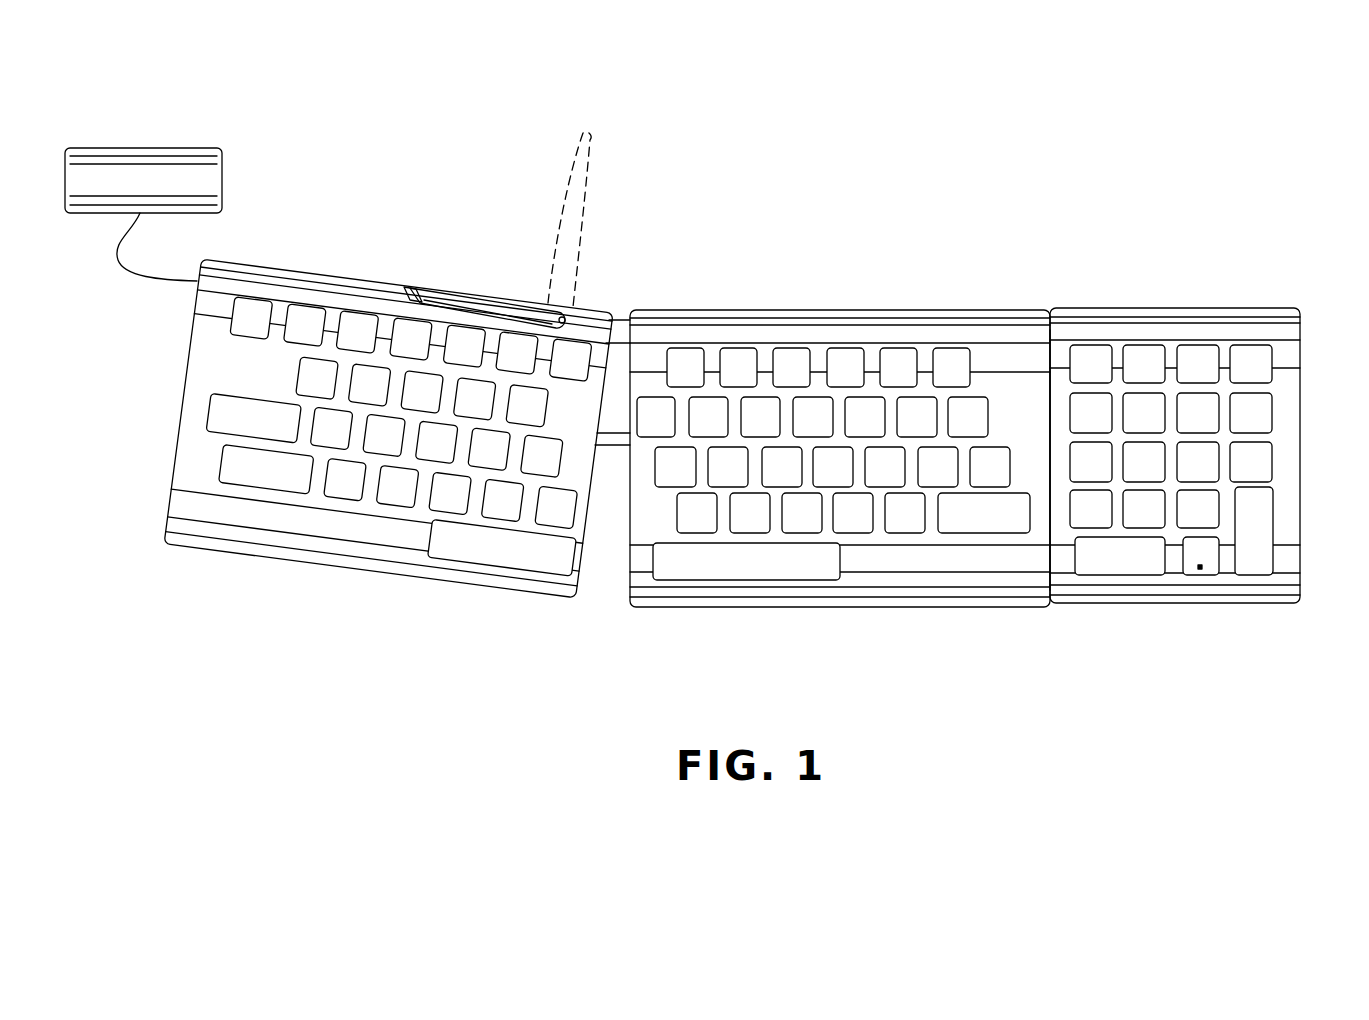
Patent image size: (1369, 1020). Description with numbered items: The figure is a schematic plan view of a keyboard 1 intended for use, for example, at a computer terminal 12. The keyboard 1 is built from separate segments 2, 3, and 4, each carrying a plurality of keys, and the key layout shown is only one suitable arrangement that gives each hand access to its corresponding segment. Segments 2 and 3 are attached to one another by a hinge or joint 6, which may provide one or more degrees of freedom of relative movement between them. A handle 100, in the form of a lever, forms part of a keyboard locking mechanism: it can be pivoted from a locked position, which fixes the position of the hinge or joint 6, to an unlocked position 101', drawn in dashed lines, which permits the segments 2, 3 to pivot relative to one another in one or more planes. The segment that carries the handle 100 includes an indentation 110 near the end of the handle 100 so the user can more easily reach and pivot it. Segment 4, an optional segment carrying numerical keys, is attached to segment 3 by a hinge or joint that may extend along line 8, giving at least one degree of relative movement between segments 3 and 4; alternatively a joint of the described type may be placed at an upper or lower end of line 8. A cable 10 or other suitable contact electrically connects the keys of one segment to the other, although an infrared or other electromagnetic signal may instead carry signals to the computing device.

The keyboard 1 is at (766, 469).
The segment 2 is at (430, 593).
The segment 3 is at (850, 612).
The segment 4 is at (1120, 612).
The hinge or joint 6 is at (628, 333).
The line 8 is at (1053, 327).
The cable 10 is at (617, 455).
The computer terminal 12 is at (218, 177).
The handle 100 is at (433, 283).
The unlocked position 101' is at (618, 186).
The indentation 110 is at (398, 296).